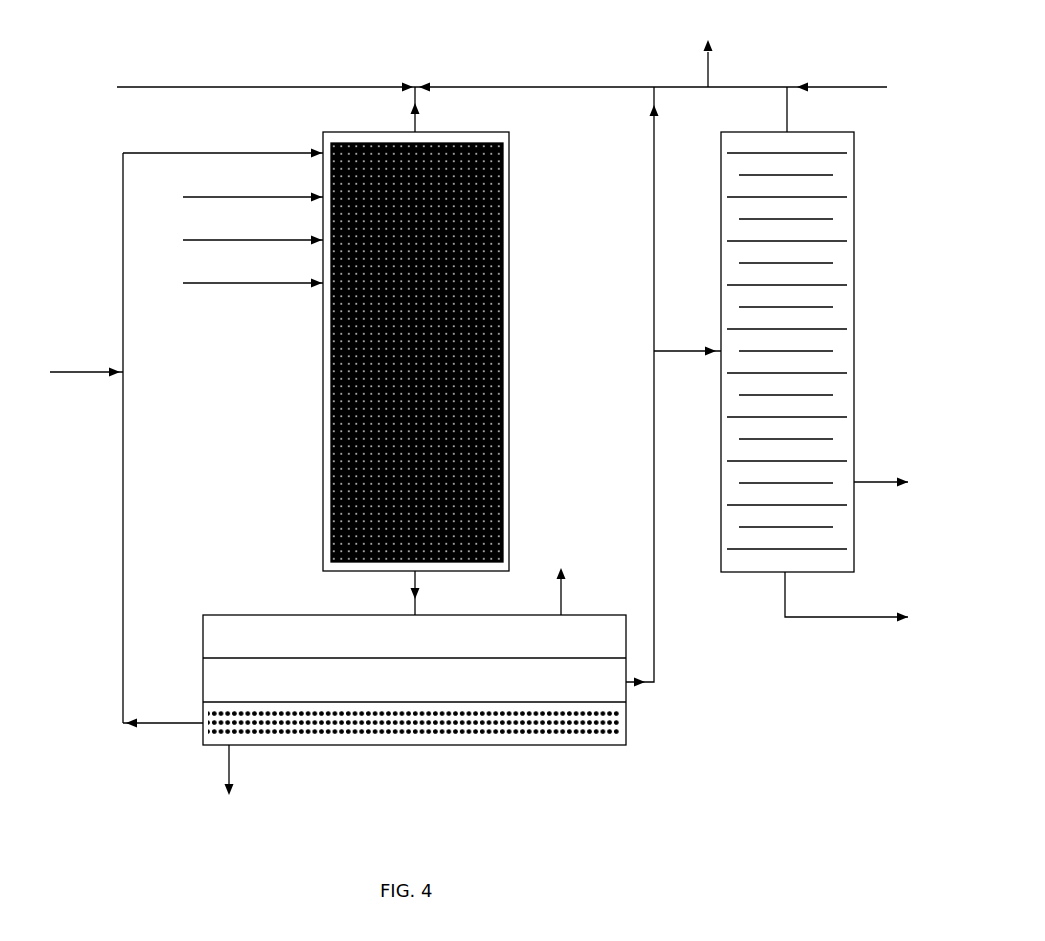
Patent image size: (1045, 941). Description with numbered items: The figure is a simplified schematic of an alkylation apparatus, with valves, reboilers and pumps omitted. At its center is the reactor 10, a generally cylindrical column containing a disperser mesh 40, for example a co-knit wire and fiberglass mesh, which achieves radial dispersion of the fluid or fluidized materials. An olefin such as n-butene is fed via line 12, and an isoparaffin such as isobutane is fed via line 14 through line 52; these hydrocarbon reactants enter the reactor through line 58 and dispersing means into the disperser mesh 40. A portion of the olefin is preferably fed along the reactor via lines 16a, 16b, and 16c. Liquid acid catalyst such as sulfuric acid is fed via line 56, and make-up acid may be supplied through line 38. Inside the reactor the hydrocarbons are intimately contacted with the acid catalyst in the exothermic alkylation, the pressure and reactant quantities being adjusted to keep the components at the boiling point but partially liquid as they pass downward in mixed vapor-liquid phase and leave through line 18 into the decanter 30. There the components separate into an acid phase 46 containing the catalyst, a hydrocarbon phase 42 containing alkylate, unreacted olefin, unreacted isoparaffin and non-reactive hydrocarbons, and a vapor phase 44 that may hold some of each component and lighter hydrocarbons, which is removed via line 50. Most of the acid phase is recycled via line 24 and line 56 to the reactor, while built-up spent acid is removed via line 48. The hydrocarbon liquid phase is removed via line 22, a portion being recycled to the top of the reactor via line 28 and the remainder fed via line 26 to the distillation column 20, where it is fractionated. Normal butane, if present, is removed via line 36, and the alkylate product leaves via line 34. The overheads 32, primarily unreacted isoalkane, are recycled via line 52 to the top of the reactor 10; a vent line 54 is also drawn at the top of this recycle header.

The reactor 10 is at (509, 132).
The line 12 is at (197, 87).
The line 14 is at (828, 87).
The line 16a is at (243, 197).
The line 16b is at (250, 240).
The line 16c is at (250, 283).
The line 18 is at (412, 592).
The distillation column 20 is at (856, 155).
The line 22 is at (654, 462).
The line 24 is at (123, 683).
The line 26 is at (667, 352).
The line 28 is at (654, 245).
The decanter 30 is at (243, 615).
The overheads 32 is at (780, 110).
The line 34 is at (888, 618).
The line 36 is at (862, 482).
The line 38 is at (97, 372).
The disperser mesh 40 is at (499, 258).
The hydrocarbon phase 42 is at (406, 695).
The vapor phase 44 is at (406, 651).
The acid phase 46 is at (462, 732).
The line 48 is at (229, 762).
The line 50 is at (562, 592).
The line 52 is at (672, 87).
The vent line 54 is at (704, 62).
The line 56 is at (137, 153).
The line 58 is at (416, 120).